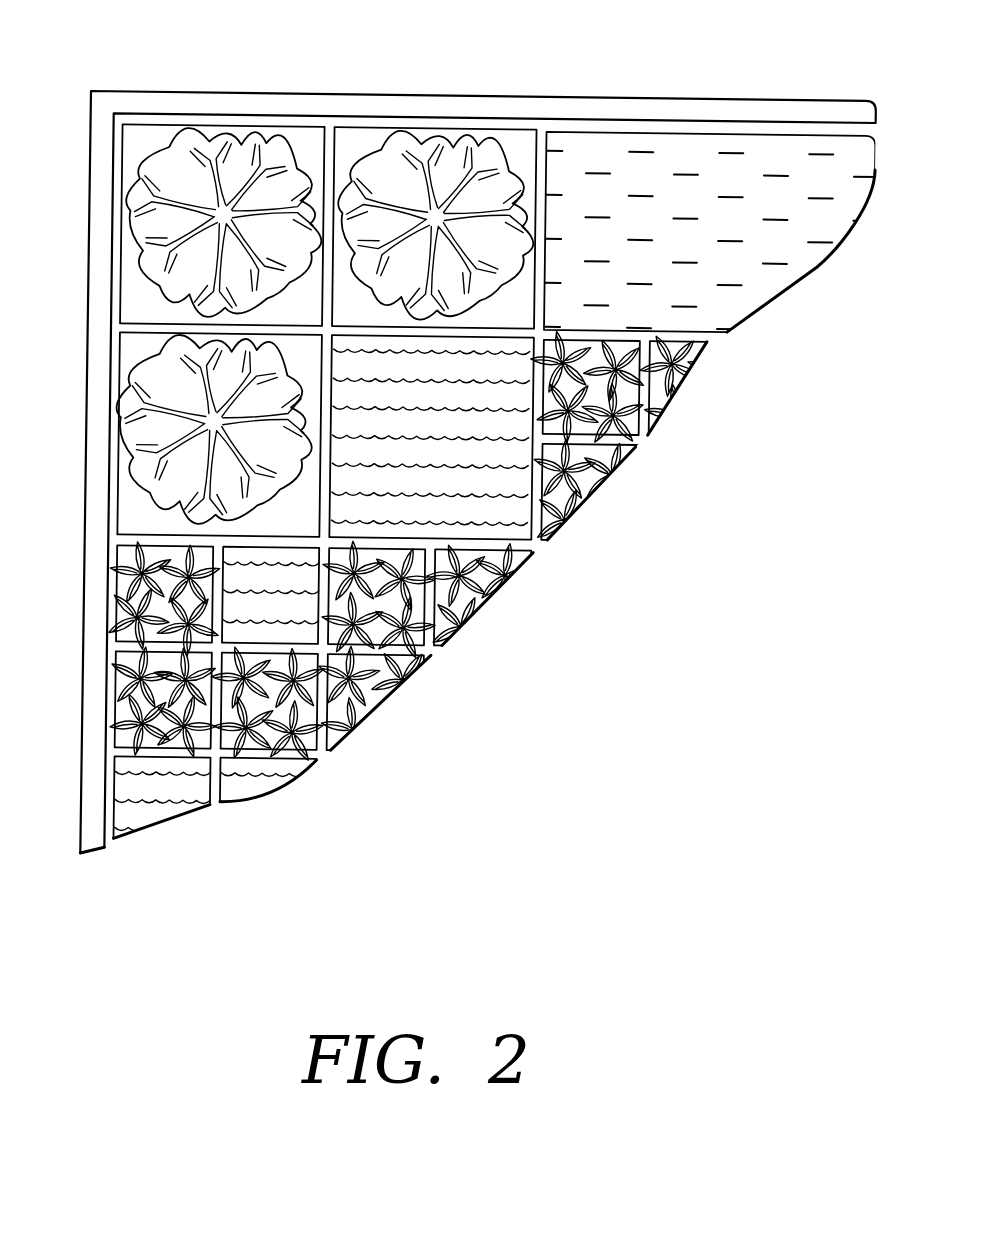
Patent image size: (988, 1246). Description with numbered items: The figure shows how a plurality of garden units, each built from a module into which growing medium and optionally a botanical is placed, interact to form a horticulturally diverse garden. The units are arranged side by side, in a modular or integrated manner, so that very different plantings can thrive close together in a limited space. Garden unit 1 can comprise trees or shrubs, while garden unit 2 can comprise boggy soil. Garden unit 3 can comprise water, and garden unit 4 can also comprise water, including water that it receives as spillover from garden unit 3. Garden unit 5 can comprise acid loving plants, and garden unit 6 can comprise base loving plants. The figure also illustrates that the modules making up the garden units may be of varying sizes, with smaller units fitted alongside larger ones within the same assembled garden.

The garden unit 1 is at (218, 152).
The garden unit 2 is at (685, 170).
The garden unit 3 is at (472, 480).
The garden unit 4 is at (268, 573).
The garden unit 5 is at (460, 633).
The garden unit 6 is at (120, 588).